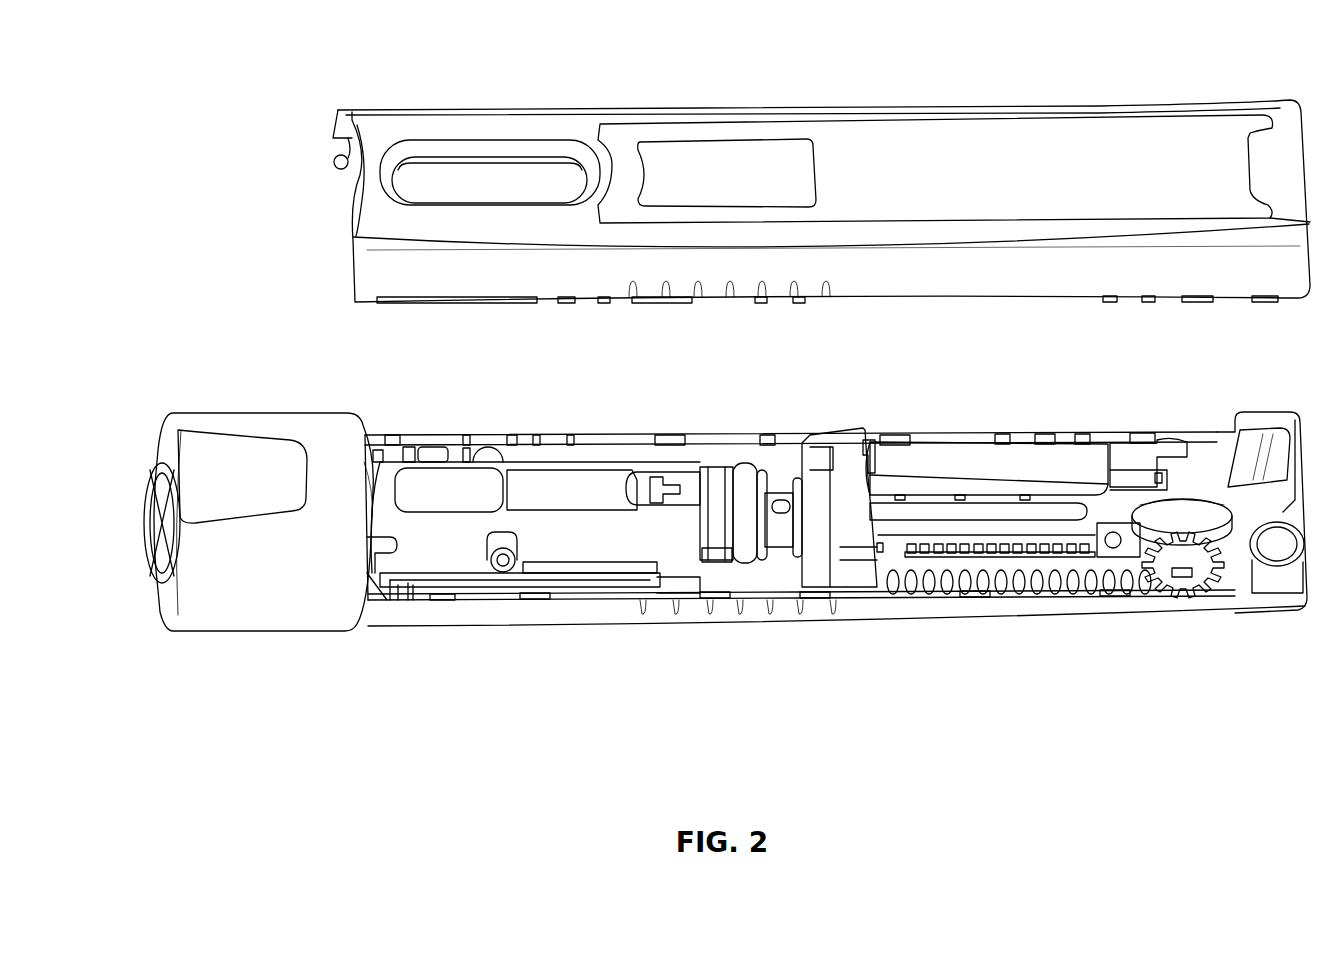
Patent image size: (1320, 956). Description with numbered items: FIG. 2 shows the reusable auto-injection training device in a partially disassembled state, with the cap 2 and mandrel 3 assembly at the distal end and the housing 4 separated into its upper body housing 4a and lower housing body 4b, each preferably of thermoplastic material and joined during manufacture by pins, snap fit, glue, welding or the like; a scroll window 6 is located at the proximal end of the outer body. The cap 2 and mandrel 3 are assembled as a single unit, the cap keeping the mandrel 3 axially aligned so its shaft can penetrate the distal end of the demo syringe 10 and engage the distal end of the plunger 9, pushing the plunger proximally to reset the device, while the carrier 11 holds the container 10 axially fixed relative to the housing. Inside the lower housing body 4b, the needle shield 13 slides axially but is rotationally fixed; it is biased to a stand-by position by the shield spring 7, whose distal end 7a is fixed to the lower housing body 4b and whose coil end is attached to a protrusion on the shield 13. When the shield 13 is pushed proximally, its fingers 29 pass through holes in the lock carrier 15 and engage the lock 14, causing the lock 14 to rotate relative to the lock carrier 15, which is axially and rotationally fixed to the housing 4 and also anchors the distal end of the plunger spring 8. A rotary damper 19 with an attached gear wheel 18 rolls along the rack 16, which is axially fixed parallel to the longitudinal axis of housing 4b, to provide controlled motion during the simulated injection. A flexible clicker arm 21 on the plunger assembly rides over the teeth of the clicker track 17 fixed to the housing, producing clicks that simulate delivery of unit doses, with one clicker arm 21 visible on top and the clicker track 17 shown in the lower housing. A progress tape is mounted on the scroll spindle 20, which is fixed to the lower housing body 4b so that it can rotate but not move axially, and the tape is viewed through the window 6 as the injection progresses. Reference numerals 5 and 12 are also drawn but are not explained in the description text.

The cap 2 is at (246, 425).
The mandrel 3 is at (163, 468).
The housing 4 is at (1053, 115).
The upper body housing 4a is at (1268, 150).
The lower housing body 4b is at (895, 620).
The window slot 5 is at (530, 170).
The scroll window 6 is at (1273, 415).
The shield spring 7 is at (428, 452).
The distal end of shield spring 7a is at (397, 600).
The plunger spring 8 is at (1002, 460).
The plunger 9 is at (922, 497).
The demo syringe 10 is at (747, 477).
The carrier 11 is at (530, 493).
The flange disc 12 is at (755, 560).
The needle shield 13 is at (600, 550).
The lock 14 is at (869, 444).
The lock carrier 15 is at (832, 467).
The rack 16 is at (985, 590).
The clicker track 17 is at (1045, 552).
The gear wheel 18 is at (1163, 595).
The rotary damper 19 is at (1185, 505).
The scroll spindle 20 is at (1277, 585).
The clicker arm 21 is at (1158, 472).
The shield fingers 29 is at (717, 560).